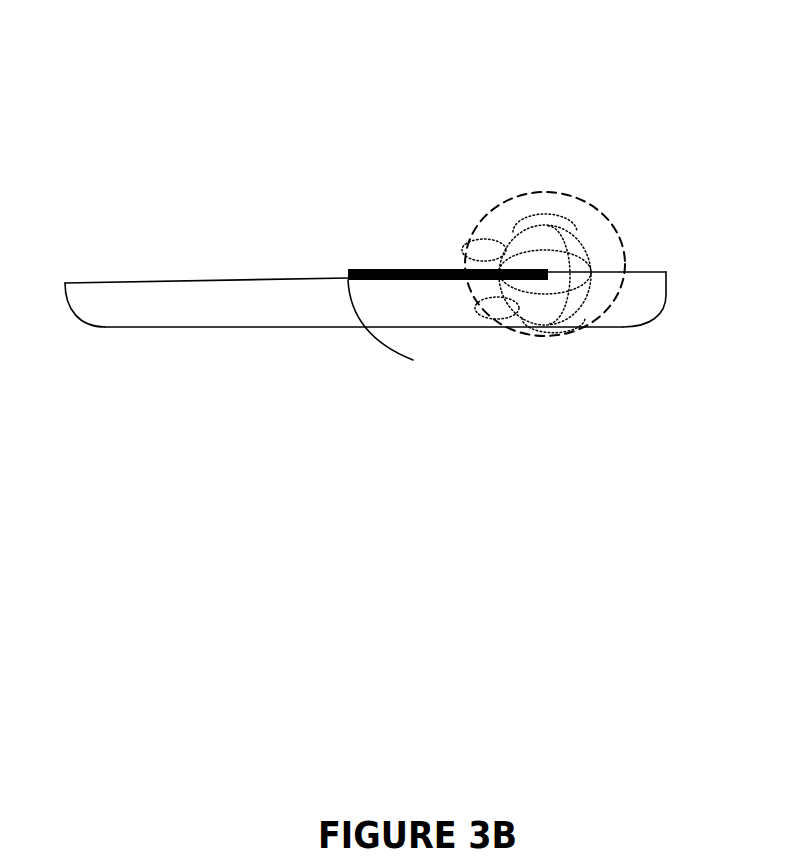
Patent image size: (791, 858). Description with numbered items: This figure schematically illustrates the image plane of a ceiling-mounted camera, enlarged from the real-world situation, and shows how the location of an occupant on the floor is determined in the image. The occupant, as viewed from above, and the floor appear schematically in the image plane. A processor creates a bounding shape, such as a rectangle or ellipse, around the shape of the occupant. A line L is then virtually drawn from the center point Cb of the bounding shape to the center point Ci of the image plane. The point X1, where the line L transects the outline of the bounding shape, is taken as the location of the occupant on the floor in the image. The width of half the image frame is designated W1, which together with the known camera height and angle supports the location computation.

The width of half the image frame W1 is at (664, 300).
The line L is at (448, 256).
The center point of the image plane Ci is at (338, 267).
The point of transection X1 is at (459, 258).
The center point of the bounding shape Cb is at (557, 270).